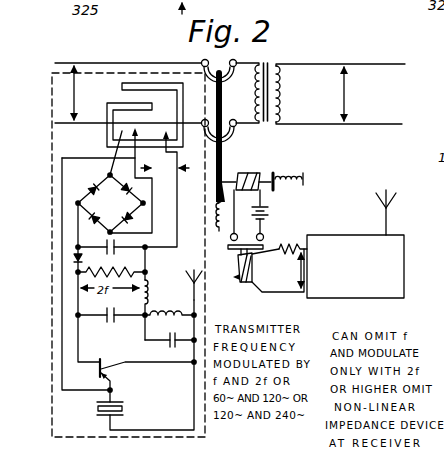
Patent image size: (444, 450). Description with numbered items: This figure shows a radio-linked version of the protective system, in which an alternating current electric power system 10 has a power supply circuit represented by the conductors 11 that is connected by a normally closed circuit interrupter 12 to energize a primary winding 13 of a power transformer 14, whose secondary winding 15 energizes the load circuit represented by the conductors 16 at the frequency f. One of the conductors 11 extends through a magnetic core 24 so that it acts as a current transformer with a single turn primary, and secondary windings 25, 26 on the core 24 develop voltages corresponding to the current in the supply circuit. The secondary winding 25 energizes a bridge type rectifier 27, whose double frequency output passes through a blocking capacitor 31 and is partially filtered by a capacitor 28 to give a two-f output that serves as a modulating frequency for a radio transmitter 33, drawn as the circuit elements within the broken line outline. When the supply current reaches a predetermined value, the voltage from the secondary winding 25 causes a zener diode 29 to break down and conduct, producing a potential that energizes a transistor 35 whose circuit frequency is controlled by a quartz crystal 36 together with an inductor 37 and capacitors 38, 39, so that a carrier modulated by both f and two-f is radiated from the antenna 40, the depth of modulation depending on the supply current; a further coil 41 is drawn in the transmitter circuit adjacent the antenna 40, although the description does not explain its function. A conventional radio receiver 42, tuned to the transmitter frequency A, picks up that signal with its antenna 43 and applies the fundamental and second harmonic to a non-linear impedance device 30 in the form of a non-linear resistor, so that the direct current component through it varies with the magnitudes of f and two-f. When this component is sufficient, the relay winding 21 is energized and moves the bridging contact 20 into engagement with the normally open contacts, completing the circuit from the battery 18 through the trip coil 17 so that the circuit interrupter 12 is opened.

The alternating current electric power system 10 is at (151, 48).
The conductors of the power supply circuit 11 is at (92, 62).
The circuit interrupter 12 is at (238, 131).
The primary winding 13 is at (252, 95).
The power transformer 14 is at (288, 61).
The secondary winding 15 is at (287, 90).
The conductors of the load circuit 16 is at (377, 64).
The trip winding or coil 17 is at (256, 172).
The battery 18 is at (266, 218).
The bridging contact 20 is at (262, 246).
The relay winding 21 is at (238, 262).
The magnetic core 24 is at (143, 84).
The secondary winding 25 is at (120, 131).
The secondary winding 26 is at (160, 134).
The bridge type rectifier 27 is at (92, 184).
The capacitor 28 is at (106, 244).
The zener diode 29 is at (89, 262).
The non-linear impedance device 30 is at (291, 243).
The blocking capacitor 31 is at (139, 272).
The radio transmitter 33 is at (44, 147).
The transistor 35 is at (126, 378).
The quartz crystal 36 is at (127, 410).
The inductor 37 is at (169, 302).
The capacitor 38 is at (173, 347).
The capacitor 39 is at (108, 323).
The antenna 40 is at (210, 286).
The inductor 41 is at (160, 297).
The radio receiver 42 is at (347, 235).
The antenna 43 is at (391, 222).